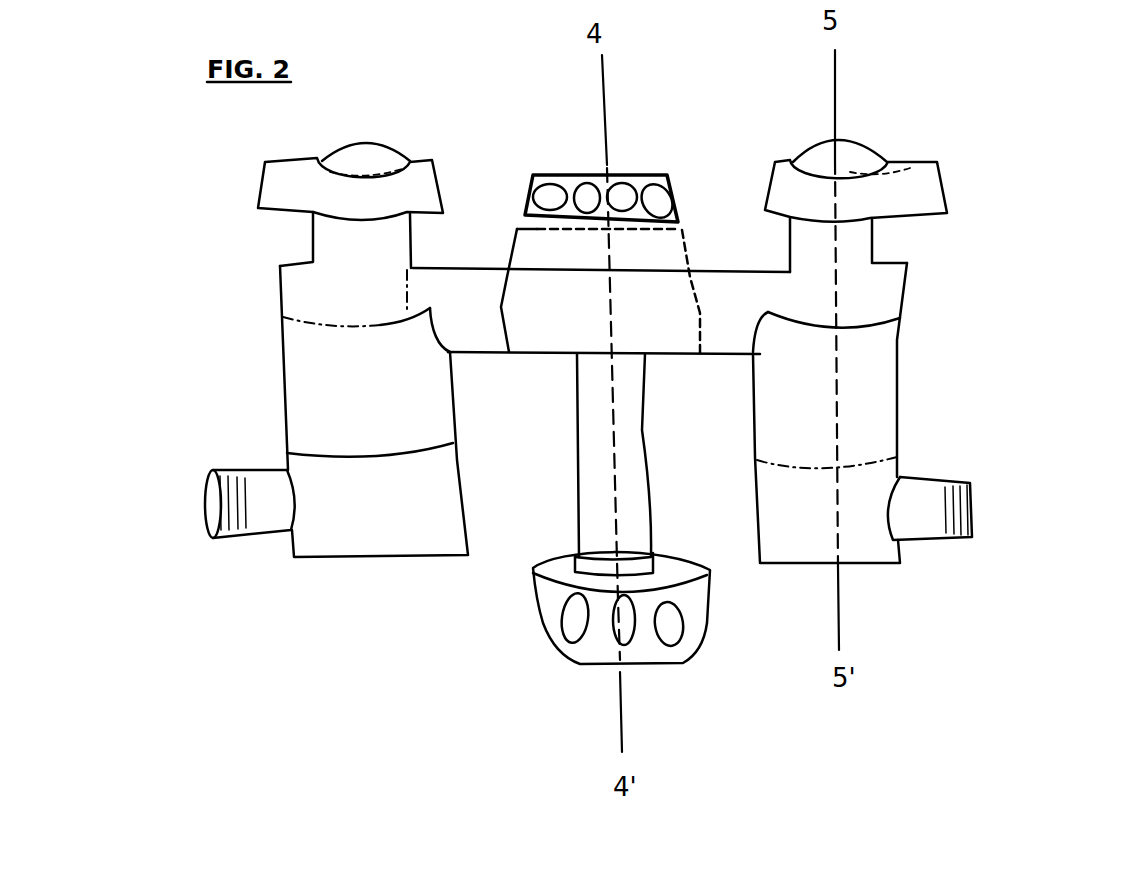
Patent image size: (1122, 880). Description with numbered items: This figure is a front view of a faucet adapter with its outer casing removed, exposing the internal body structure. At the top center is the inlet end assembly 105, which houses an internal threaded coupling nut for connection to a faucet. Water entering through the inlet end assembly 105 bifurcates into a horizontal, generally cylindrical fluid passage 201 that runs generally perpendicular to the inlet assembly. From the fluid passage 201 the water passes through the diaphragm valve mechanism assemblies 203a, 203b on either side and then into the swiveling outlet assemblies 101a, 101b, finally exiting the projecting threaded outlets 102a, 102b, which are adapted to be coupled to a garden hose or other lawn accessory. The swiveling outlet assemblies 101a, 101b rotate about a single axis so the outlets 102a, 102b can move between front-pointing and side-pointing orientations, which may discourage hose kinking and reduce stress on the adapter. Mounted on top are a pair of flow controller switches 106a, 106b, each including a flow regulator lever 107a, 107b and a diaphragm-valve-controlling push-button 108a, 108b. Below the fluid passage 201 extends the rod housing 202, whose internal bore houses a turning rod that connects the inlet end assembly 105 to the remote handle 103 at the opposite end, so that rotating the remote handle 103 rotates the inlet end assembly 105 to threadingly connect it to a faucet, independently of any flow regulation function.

The swiveling outlet assembly 101a is at (305, 456).
The swiveling outlet assembly 101b is at (929, 444).
The projecting threaded outlet 102a is at (242, 530).
The projecting threaded outlet 102b is at (952, 503).
The remote handle 103 is at (636, 568).
The inlet end assembly 105 is at (645, 162).
The flow controller switch 106a is at (306, 186).
The flow controller switch 106b is at (920, 185).
The flow regulator lever 107a is at (287, 176).
The flow regulator lever 107b is at (917, 175).
The diaphragm-valve-controlling push-button 108a is at (363, 158).
The diaphragm-valve-controlling push-button 108b is at (855, 153).
The fluid passage 201 is at (548, 335).
The rod housing 202 is at (622, 488).
The diaphragm valve mechanism assembly 203a is at (353, 297).
The diaphragm valve mechanism assembly 203b is at (855, 298).